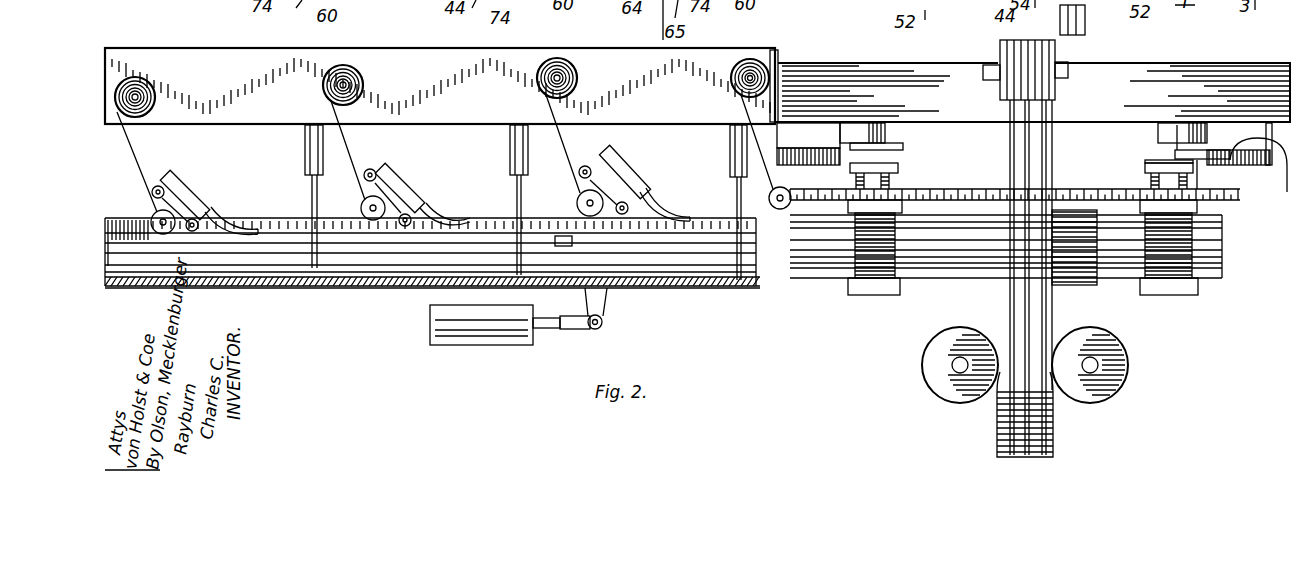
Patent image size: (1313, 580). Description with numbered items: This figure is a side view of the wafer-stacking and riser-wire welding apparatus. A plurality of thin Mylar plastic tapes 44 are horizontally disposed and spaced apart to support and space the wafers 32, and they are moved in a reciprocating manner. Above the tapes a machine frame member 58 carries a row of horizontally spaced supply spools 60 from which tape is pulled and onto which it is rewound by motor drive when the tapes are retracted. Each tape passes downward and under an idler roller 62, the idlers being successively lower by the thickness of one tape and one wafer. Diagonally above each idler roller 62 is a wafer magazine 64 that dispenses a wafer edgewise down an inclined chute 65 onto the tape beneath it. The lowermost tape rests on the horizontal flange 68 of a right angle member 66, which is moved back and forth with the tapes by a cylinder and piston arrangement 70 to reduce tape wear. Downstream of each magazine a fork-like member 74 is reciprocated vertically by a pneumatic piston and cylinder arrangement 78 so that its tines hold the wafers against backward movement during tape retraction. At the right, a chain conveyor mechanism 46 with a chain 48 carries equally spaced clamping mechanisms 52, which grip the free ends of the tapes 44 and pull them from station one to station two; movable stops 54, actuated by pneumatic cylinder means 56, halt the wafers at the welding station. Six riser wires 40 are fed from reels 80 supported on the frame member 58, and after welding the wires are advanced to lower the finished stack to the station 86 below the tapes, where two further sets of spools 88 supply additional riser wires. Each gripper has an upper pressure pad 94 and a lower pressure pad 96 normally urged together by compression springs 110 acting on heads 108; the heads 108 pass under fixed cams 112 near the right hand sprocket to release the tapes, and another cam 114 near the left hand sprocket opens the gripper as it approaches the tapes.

The wafers 32 is at (270, 230).
The riser wires 40 is at (1040, 157).
The plastic tapes 44 is at (570, 245).
The chain conveyor mechanism 46 is at (1262, 198).
The chain 48 is at (1075, 190).
The clamping mechanisms 52 is at (880, 297).
The movable stops 54 is at (1068, 288).
The pneumatic cylinder means 56 is at (1085, 32).
The machine frame member 58 is at (816, 68).
The supply spools 60 is at (145, 88).
The idler roller 62 is at (368, 190).
The wafer magazine 64 is at (188, 182).
The inclined chute 65 is at (670, 197).
The right angle member 66 is at (430, 288).
The horizontal flange 68 is at (358, 288).
The cylinder and piston arrangement 70 is at (463, 322).
The fork-like members 74 is at (310, 212).
The pneumatic piston and cylinder arrangements 78 is at (515, 155).
The reels 80 is at (1000, 52).
The station 86 is at (995, 433).
The spools 88 is at (930, 378).
The pressure pad 94 is at (898, 208).
The pressure pad 96 is at (900, 288).
The heads 108 is at (898, 166).
The compression springs 110 is at (1148, 175).
The fixed cams 112 is at (1268, 171).
The cam 114 is at (872, 163).